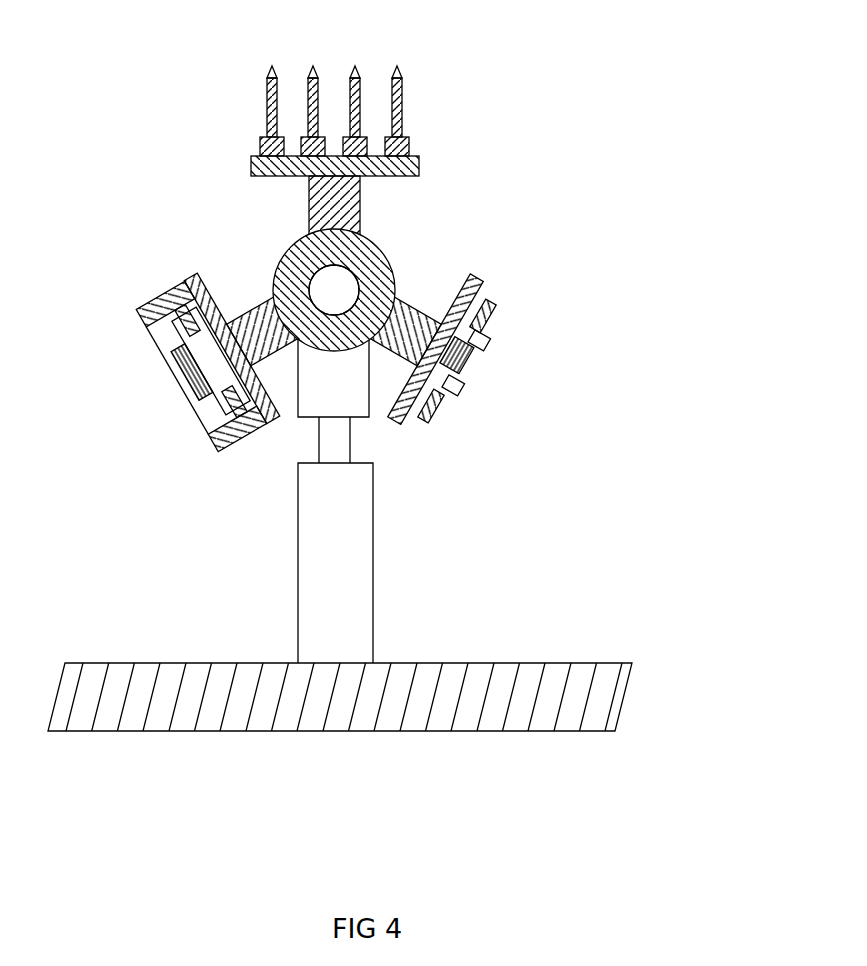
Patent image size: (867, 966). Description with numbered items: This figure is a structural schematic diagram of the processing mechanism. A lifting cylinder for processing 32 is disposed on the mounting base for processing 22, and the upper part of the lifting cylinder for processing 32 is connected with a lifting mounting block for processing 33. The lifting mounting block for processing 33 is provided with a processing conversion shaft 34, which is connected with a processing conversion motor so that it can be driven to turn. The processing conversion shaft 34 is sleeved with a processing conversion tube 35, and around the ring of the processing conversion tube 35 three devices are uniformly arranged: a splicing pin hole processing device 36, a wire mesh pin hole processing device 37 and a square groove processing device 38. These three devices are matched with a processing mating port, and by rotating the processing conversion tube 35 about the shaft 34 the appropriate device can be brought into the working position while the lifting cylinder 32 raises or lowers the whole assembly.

The mounting base for processing 22 is at (522, 703).
The lifting cylinder for processing 32 is at (330, 635).
The lifting mounting block for processing 33 is at (332, 382).
The processing conversion shaft 34 is at (340, 287).
The processing conversion tube 35 is at (280, 275).
The splicing pin hole processing device 36 is at (317, 167).
The wire mesh pin hole processing device 37 is at (467, 357).
The square groove processing device 38 is at (200, 360).